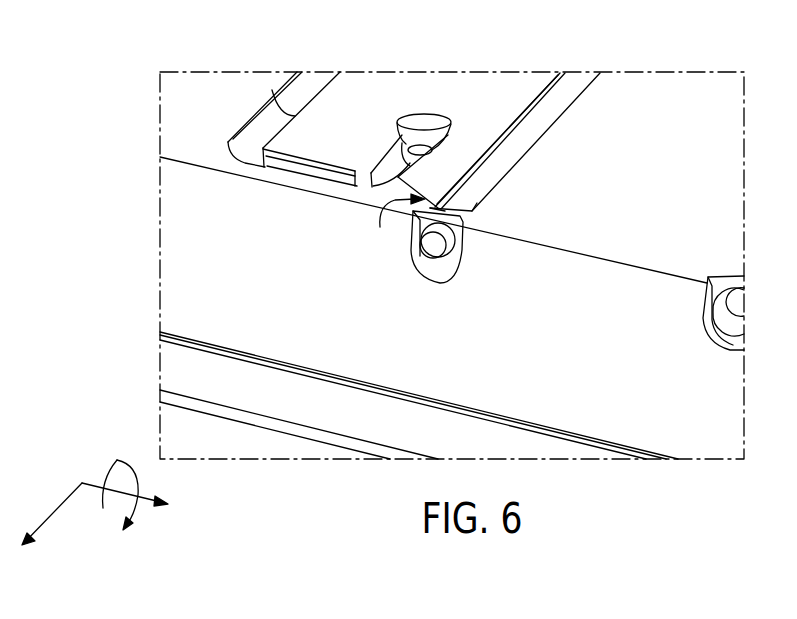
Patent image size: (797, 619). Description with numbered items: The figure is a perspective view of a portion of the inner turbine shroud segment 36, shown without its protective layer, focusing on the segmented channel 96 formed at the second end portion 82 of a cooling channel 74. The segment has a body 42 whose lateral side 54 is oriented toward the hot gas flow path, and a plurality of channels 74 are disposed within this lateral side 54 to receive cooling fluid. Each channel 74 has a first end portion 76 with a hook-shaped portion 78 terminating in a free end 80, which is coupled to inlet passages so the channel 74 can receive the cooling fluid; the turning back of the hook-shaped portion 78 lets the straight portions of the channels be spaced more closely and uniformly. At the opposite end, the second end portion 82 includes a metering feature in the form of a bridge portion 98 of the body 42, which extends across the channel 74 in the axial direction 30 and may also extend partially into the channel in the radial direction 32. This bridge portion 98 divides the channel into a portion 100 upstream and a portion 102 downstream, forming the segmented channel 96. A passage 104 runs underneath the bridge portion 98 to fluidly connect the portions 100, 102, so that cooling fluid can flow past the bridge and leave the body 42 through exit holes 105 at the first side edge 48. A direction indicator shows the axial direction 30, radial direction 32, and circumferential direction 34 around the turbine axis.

The axial direction 30 is at (145, 505).
The radial direction 32 is at (57, 510).
The circumferential direction 34 is at (117, 460).
The inner turbine shroud segment 36 is at (317, 333).
The body 42 is at (353, 342).
The first side edge 48 is at (275, 327).
The lateral side 54 is at (635, 92).
The channel 74 is at (278, 163).
The first end portion 76 is at (318, 182).
The hook-shaped portion 78 is at (347, 185).
The free end 80 is at (422, 130).
The second end portion 82 is at (473, 195).
The segmented channel 96 is at (397, 227).
The bridge portion 98 is at (437, 207).
The portion of the channel upstream of the bridge portion 100 is at (459, 193).
The portion of the channel downstream of the bridge portion 102 is at (443, 267).
The passage 104 is at (445, 228).
The exit holes 105 is at (428, 252).